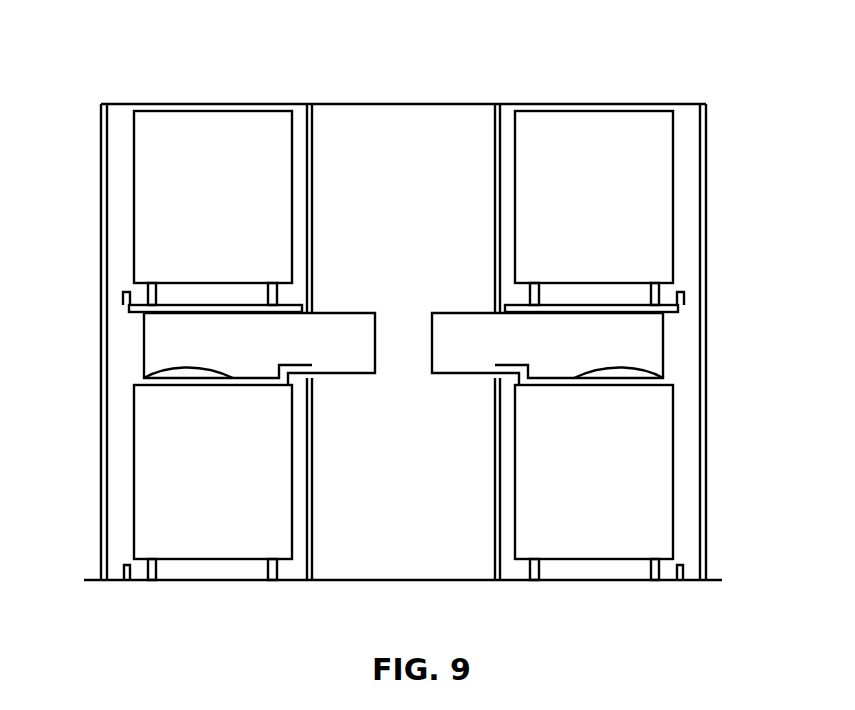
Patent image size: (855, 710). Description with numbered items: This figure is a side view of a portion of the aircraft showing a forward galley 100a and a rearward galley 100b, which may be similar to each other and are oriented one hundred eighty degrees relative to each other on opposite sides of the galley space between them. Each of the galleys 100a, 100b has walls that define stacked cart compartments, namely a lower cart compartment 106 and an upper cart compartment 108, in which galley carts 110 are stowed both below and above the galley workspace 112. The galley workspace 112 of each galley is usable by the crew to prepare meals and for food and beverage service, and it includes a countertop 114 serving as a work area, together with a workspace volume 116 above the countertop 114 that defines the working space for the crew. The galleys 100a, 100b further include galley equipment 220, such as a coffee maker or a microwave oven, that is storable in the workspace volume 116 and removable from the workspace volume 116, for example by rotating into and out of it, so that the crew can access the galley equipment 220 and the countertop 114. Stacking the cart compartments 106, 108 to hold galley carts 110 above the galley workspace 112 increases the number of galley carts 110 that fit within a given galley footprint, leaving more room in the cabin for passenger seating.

The forward galley 100a is at (256, 69).
The rearward galley 100b is at (549, 69).
The lower cart compartment 106 is at (319, 542).
The upper cart compartment 108 is at (315, 156).
The galley cart 110 is at (157, 208).
The galley workspace 112 is at (188, 353).
The countertop 114 is at (143, 376).
The workspace volume 116 is at (170, 332).
The galley equipment 220 is at (475, 301).